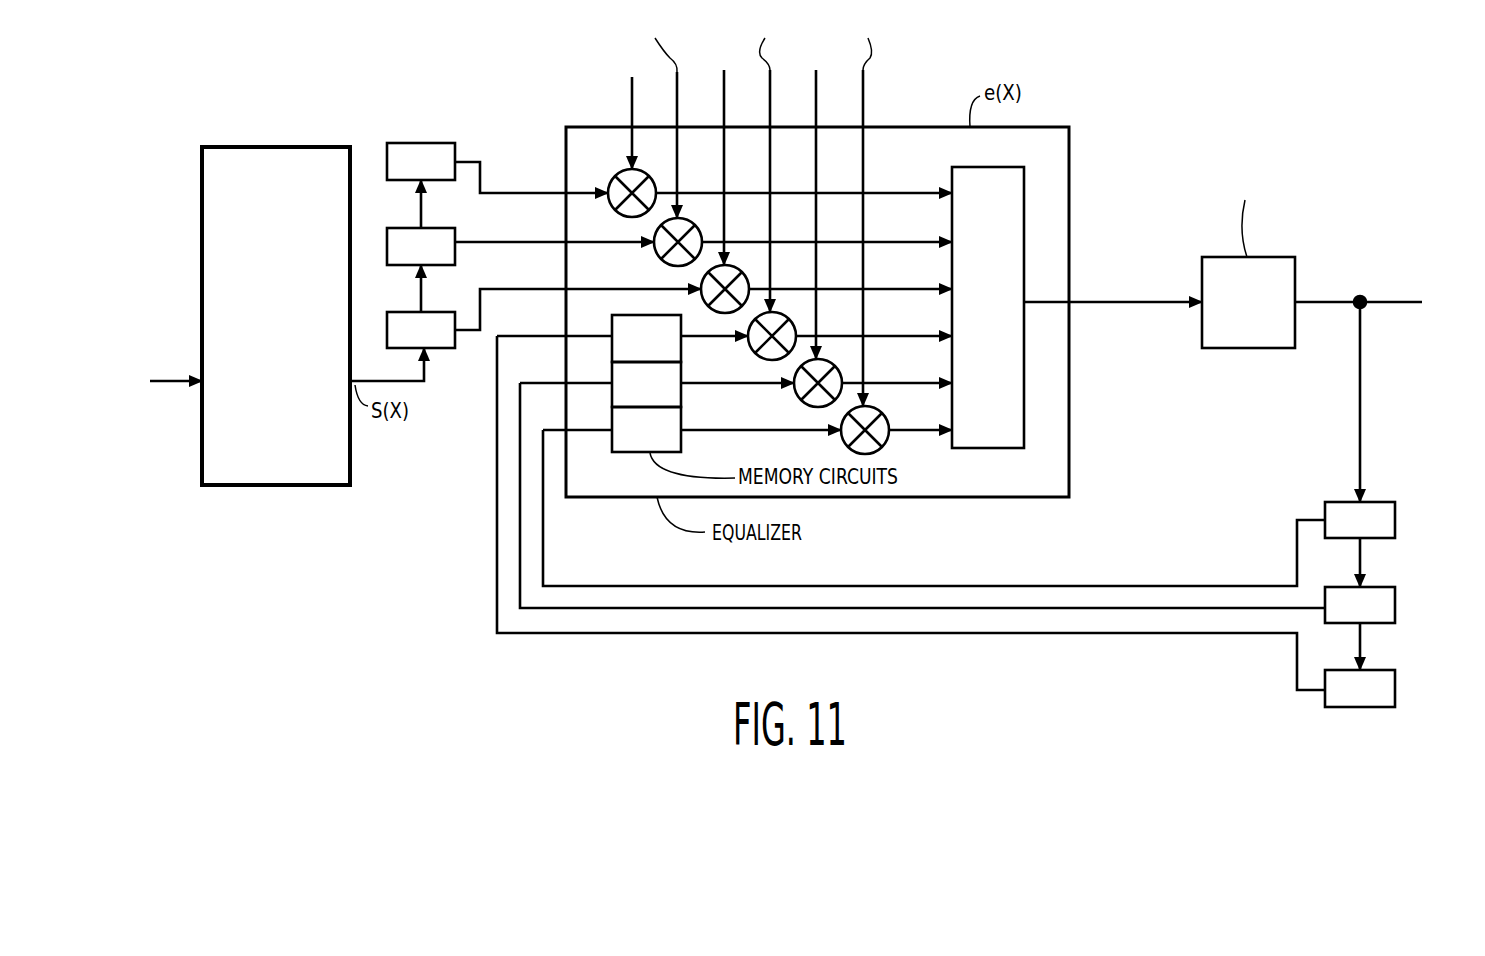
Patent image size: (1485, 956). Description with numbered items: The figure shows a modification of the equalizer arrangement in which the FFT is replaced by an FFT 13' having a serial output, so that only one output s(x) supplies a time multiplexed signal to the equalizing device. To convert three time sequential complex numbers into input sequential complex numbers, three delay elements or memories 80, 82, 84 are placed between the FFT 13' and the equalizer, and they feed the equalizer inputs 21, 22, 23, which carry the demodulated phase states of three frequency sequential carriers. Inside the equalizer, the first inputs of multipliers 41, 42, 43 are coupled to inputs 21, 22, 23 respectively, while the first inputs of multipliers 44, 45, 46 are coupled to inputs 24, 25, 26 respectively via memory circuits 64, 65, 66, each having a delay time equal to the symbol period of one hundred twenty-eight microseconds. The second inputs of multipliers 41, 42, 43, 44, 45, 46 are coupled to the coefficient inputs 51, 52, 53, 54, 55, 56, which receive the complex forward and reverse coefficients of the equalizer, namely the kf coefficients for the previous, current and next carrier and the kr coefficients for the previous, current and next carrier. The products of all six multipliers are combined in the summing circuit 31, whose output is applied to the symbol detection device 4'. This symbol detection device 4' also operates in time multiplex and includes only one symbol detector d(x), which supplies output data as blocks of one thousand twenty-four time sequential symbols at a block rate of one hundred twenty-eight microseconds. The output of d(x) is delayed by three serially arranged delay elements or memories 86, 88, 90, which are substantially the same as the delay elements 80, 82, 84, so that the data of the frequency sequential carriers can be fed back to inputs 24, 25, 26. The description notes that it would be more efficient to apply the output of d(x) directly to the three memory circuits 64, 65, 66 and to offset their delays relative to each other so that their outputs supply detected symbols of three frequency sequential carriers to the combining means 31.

The FFT 13' is at (250, 349).
The delay element 80 is at (405, 143).
The delay element 82 is at (405, 228).
The delay element 84 is at (405, 312).
The equalizer input 21 is at (565, 193).
The equalizer input 22 is at (565, 242).
The equalizer input 23 is at (565, 289).
The equalizer input 24 is at (565, 336).
The equalizer input 25 is at (565, 383).
The equalizer input 26 is at (565, 430).
The multiplier 41 is at (650, 177).
The multiplier 42 is at (696, 226).
The multiplier 43 is at (743, 273).
The multiplier 44 is at (790, 320).
The multiplier 45 is at (836, 367).
The multiplier 46 is at (883, 414).
The coefficient input 51 is at (636, 126).
The coefficient input 52 is at (681, 126).
The coefficient input 53 is at (728, 126).
The coefficient input 54 is at (774, 126).
The coefficient input 55 is at (820, 126).
The coefficient input 56 is at (867, 126).
The memory circuit 64 is at (683, 350).
The memory circuit 65 is at (683, 396).
The memory circuit 66 is at (683, 441).
The summing circuit 31 is at (975, 167).
The symbol detection device 4' is at (1248, 281).
The delay element 86 is at (1395, 518).
The delay element 88 is at (1395, 603).
The delay element 90 is at (1395, 686).